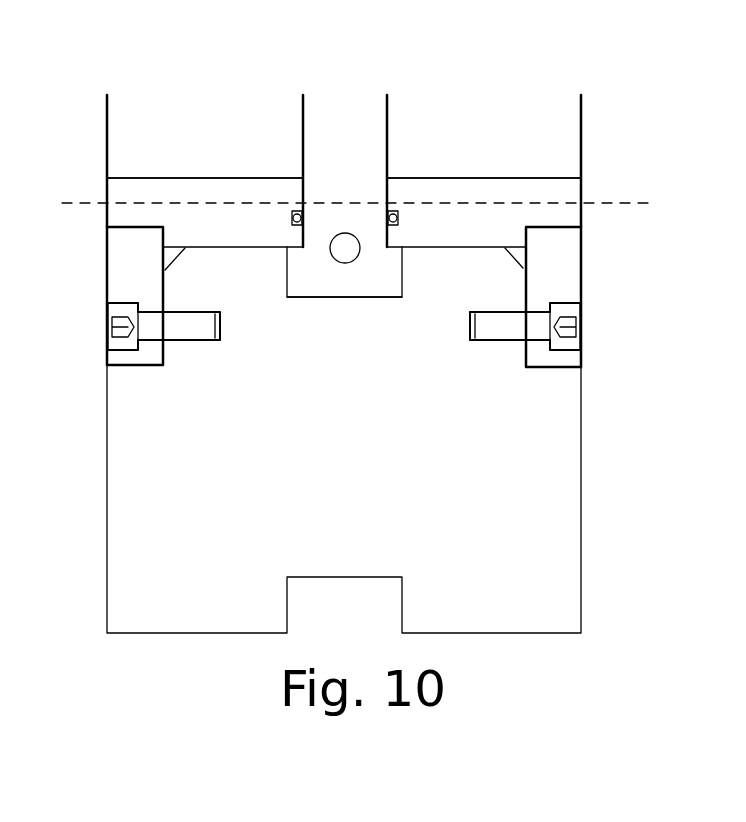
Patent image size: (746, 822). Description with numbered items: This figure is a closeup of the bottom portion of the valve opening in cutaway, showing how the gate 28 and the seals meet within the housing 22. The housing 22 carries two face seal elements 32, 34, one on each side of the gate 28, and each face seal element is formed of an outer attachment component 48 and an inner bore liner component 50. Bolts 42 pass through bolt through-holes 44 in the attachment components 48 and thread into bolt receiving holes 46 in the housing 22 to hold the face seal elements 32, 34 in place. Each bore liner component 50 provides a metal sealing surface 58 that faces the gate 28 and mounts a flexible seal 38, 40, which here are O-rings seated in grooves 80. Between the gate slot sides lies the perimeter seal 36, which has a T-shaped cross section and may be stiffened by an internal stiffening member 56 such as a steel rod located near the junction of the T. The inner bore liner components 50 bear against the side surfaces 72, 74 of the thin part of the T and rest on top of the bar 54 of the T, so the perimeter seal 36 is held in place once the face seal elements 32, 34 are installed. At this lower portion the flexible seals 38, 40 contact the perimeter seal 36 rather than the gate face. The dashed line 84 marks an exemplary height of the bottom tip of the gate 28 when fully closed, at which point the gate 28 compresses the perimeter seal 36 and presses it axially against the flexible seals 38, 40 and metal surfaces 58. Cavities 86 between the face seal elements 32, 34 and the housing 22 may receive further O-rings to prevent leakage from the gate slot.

The housing 22 is at (581, 521).
The gate 28 is at (389, 112).
The face seal element 32 is at (106, 195).
The face seal element 34 is at (583, 193).
The perimeter seal 36 is at (337, 298).
The flexible seal 38 is at (290, 211).
The flexible seal 40 is at (398, 212).
The bolt 42 is at (122, 325).
The bolt through-hole 44 is at (118, 351).
The threaded bolt receiving hole 46 is at (218, 341).
The attachment component 48 is at (106, 250).
The bore liner component 50 is at (136, 177).
The bar of the T 54 is at (405, 293).
The stiffening member 56 is at (350, 262).
The metal sealing surface 58 is at (376, 183).
The side surface 72 is at (292, 203).
The side surface 74 is at (398, 203).
The groove 80 is at (293, 216).
The dashed line 84 is at (62, 202).
The cavity 86 is at (163, 260).